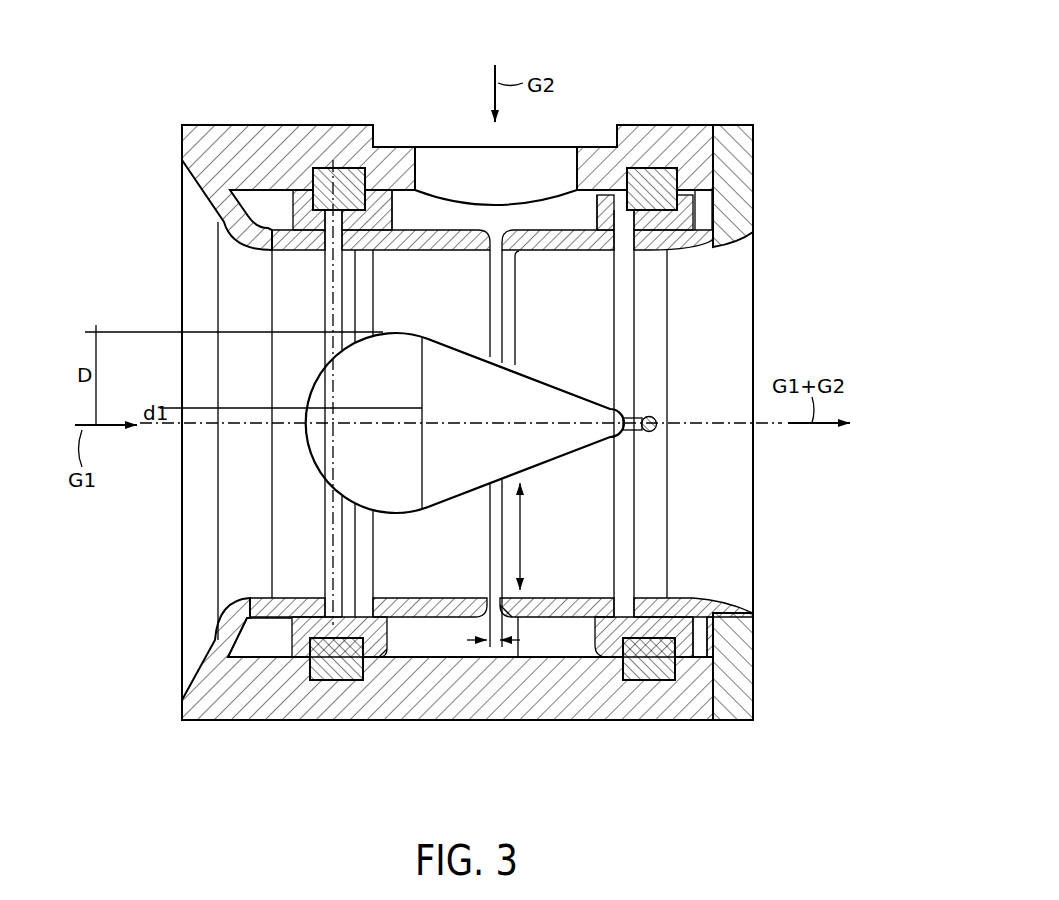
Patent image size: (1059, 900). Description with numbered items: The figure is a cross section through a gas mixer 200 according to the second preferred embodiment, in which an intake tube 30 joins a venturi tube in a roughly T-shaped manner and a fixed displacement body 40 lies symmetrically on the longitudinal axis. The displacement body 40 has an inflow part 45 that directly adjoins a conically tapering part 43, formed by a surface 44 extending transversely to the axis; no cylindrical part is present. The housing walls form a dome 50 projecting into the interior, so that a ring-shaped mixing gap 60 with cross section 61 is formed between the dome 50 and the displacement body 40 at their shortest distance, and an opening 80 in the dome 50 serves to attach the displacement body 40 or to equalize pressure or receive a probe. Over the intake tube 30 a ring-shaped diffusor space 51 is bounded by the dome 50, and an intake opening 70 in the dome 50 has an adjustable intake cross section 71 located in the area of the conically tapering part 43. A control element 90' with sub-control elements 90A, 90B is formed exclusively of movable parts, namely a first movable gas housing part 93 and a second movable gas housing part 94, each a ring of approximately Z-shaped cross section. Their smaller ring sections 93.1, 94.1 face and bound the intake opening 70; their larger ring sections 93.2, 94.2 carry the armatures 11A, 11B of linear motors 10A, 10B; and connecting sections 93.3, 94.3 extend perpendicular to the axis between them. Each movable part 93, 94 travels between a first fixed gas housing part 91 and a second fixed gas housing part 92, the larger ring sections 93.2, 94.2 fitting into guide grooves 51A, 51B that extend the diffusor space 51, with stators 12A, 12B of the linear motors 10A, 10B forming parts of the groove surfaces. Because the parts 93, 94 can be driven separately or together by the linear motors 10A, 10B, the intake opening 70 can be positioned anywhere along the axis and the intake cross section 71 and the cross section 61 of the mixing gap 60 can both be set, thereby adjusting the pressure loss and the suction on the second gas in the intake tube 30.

The gas mixer 200 is at (762, 53).
The first linear motor 10A is at (340, 166).
The stator 12A is at (322, 170).
The intake tube 30 is at (590, 147).
The second linear motor 10B is at (641, 167).
The stator 12B is at (667, 167).
The intake opening 70 is at (495, 250).
The diffusor space 51 is at (436, 223).
The first fixed gas housing part 91 is at (212, 170).
The second fixed gas housing part 92 is at (730, 243).
The first movable gas housing part 93 is at (437, 252).
The second movable gas housing part 94 is at (589, 252).
The dome 50 is at (232, 273).
The armature 11A is at (327, 205).
The armature 11B is at (653, 205).
The mixing gap 60 is at (516, 290).
The inflow part 45 is at (388, 406).
The conically tapering part 43 is at (474, 405).
The surface 44 is at (515, 370).
The displacement body 40 is at (315, 448).
The sub-control element 90A is at (316, 562).
The sub-control element 90B is at (680, 575).
The opening 80 is at (327, 597).
The connecting section 93.3 is at (378, 625).
The control element 90' is at (477, 563).
The cross section of mixing gap 61 is at (527, 548).
The connecting section 94.3 is at (605, 614).
The guide groove 51A is at (283, 650).
The guide groove 51B is at (705, 627).
The ring section of smaller cross section 93.1 is at (437, 645).
The ring section of larger cross section 94.2 is at (607, 633).
The ring section of larger cross section 93.2 is at (383, 652).
The intake cross section 71 is at (522, 642).
The ring section of smaller cross section 94.1 is at (518, 620).